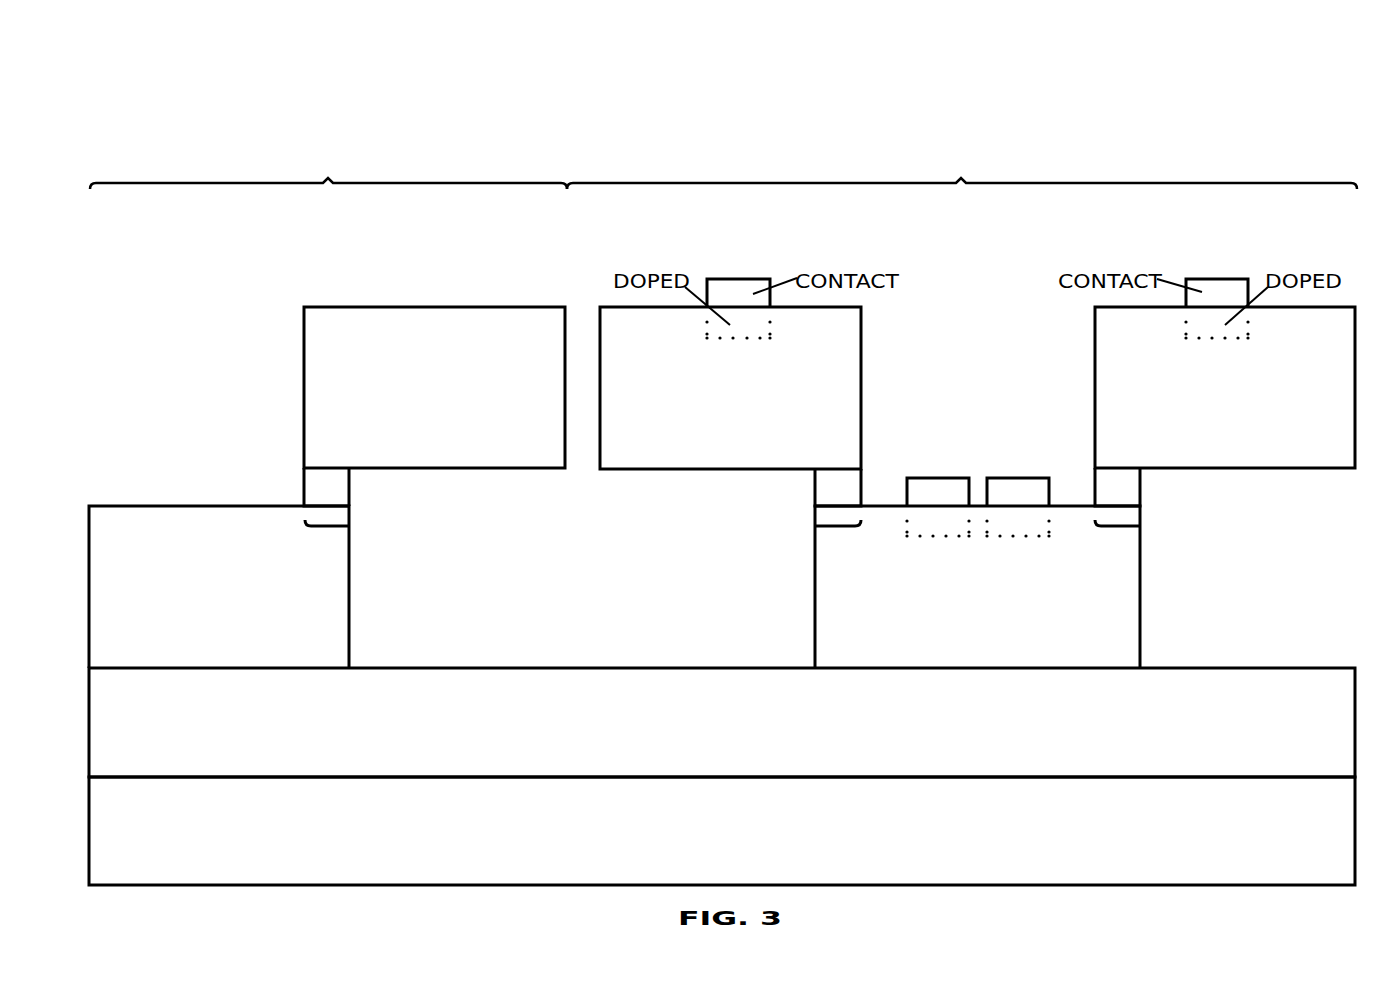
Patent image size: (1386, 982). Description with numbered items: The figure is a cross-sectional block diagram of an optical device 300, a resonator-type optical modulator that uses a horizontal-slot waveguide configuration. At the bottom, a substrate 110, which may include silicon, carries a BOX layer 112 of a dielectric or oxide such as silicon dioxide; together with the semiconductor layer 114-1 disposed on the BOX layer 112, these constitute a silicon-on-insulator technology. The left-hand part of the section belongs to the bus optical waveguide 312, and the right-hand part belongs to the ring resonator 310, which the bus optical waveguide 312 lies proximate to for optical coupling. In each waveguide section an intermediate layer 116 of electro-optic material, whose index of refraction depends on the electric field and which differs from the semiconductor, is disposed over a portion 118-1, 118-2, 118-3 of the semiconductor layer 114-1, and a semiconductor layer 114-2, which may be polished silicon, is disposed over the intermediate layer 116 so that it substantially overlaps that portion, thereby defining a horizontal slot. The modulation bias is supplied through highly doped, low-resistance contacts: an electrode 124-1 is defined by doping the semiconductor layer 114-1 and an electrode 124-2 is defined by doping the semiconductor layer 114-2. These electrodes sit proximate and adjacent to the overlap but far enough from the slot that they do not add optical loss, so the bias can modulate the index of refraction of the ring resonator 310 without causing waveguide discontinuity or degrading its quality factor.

The optical device 300 is at (1230, 115).
The ring resonator 310 is at (962, 143).
The bus optical waveguide 312 is at (328, 131).
The substrate 110 is at (739, 857).
The BOX layer 112 is at (739, 747).
The semiconductor layer 114-1 is at (1003, 625).
The semiconductor layer 114-2 is at (1252, 423).
The intermediate layer 116 is at (342, 478).
The portion 118-1 is at (325, 528).
The portion 118-2 is at (838, 527).
The portion 118-3 is at (1117, 527).
The electrode 124-1 is at (1049, 463).
The electrode 124-2 is at (1248, 263).